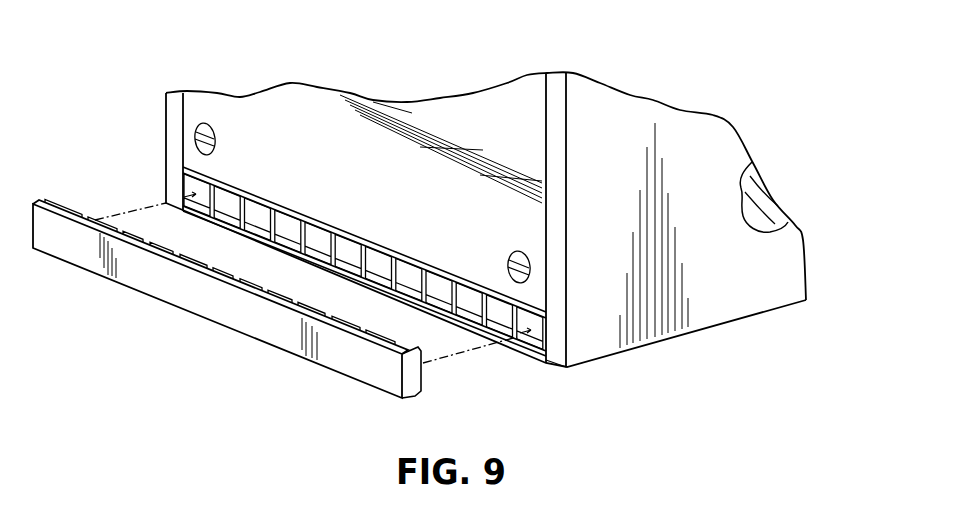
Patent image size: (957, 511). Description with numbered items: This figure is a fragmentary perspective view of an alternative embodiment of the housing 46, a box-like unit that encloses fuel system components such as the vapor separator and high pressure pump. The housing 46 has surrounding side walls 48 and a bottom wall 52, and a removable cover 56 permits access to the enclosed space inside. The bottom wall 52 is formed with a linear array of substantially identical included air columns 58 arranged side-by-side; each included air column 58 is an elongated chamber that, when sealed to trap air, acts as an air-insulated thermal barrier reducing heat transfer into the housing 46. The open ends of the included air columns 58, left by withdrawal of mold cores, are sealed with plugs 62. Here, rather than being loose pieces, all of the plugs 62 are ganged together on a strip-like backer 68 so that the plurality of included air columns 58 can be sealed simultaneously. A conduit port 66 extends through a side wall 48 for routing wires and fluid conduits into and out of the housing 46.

The housing 46 is at (654, 98).
The side walls 48 is at (553, 82).
The bottom wall 52 is at (552, 367).
The removable cover 56 is at (477, 105).
The included air column 58 is at (283, 214).
The plug 62 is at (75, 208).
The conduit port 66 is at (752, 190).
The backer 68 is at (358, 362).